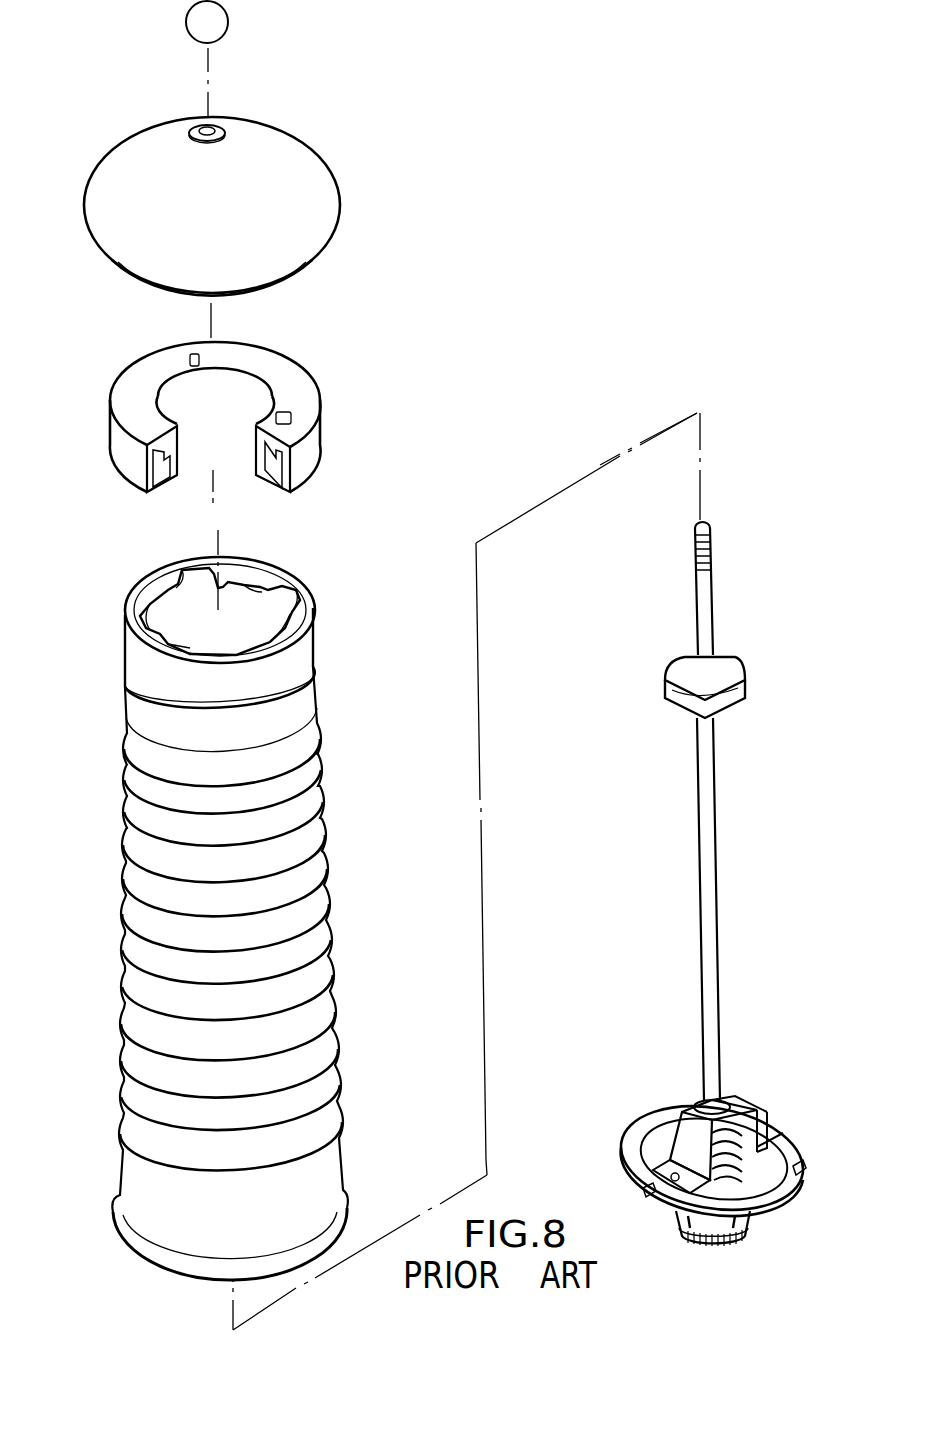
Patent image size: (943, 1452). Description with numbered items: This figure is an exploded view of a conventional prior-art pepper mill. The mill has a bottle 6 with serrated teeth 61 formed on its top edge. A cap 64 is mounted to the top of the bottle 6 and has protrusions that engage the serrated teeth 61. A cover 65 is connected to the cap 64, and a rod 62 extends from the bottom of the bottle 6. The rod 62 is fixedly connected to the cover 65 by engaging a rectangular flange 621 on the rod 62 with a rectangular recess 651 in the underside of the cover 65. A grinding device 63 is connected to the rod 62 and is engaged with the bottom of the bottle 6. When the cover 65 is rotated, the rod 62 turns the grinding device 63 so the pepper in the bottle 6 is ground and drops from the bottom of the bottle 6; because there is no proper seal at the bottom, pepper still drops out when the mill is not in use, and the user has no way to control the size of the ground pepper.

The bottle 6 is at (310, 866).
The serrated teeth 61 is at (157, 600).
The rod 62 is at (703, 940).
The rectangular flange 621 is at (724, 680).
The grinding device 63 is at (757, 1108).
The cap 64 is at (128, 398).
The cover 65 is at (308, 177).
The rectangular recess 651 is at (268, 293).